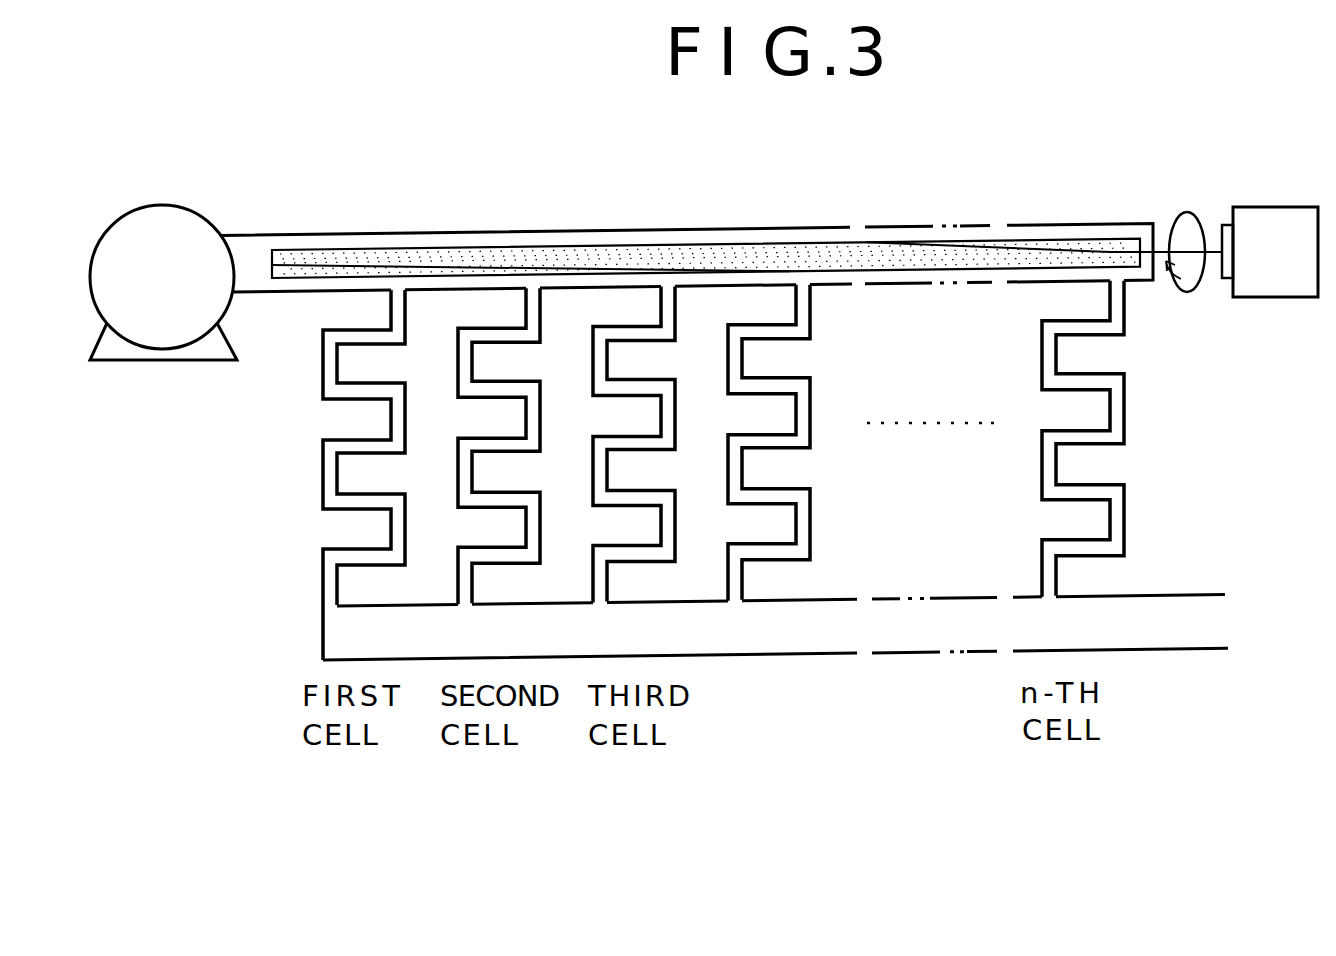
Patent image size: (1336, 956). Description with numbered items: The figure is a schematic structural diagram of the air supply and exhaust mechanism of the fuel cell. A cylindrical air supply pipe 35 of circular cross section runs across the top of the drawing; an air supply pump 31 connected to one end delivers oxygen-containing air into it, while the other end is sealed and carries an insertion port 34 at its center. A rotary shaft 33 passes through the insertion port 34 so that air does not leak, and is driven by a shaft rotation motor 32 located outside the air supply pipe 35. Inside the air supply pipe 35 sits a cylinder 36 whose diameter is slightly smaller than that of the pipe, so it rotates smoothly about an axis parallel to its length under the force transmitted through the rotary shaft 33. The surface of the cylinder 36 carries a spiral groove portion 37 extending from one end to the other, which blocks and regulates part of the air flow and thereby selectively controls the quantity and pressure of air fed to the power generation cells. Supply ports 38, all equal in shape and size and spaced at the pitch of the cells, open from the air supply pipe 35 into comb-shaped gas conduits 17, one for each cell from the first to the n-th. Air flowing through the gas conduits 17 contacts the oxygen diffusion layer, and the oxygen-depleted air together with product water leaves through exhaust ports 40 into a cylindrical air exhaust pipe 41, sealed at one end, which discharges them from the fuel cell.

The gas conduit 17 is at (330, 375).
The air supply pump 31 is at (177, 205).
The shaft rotation motor 32 is at (1296, 213).
The rotary shaft 33 is at (1168, 240).
The insertion port 34 is at (1155, 257).
The air supply pipe 35 is at (577, 233).
The cylinder 36 is at (705, 243).
The groove portion 37 is at (966, 247).
The supply port 38 is at (395, 290).
The exhaust port 40 is at (328, 605).
The air exhaust pipe 41 is at (335, 652).